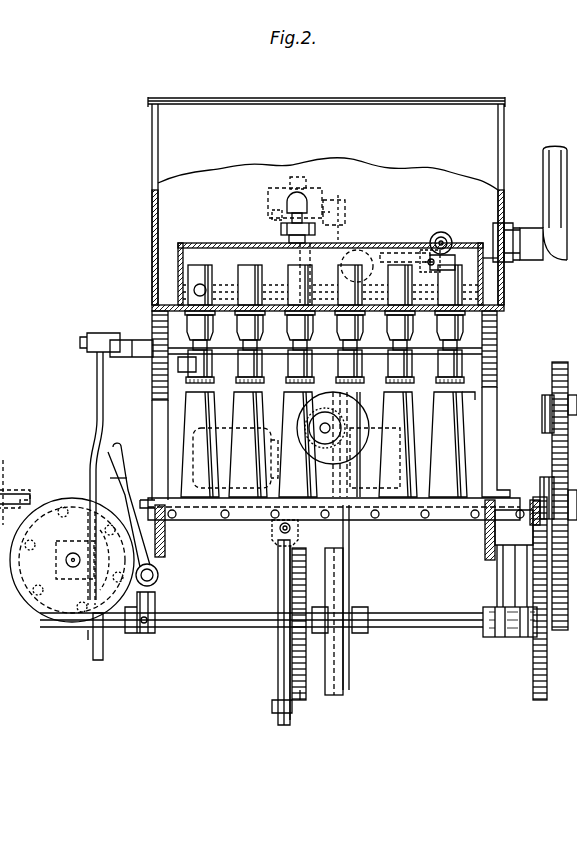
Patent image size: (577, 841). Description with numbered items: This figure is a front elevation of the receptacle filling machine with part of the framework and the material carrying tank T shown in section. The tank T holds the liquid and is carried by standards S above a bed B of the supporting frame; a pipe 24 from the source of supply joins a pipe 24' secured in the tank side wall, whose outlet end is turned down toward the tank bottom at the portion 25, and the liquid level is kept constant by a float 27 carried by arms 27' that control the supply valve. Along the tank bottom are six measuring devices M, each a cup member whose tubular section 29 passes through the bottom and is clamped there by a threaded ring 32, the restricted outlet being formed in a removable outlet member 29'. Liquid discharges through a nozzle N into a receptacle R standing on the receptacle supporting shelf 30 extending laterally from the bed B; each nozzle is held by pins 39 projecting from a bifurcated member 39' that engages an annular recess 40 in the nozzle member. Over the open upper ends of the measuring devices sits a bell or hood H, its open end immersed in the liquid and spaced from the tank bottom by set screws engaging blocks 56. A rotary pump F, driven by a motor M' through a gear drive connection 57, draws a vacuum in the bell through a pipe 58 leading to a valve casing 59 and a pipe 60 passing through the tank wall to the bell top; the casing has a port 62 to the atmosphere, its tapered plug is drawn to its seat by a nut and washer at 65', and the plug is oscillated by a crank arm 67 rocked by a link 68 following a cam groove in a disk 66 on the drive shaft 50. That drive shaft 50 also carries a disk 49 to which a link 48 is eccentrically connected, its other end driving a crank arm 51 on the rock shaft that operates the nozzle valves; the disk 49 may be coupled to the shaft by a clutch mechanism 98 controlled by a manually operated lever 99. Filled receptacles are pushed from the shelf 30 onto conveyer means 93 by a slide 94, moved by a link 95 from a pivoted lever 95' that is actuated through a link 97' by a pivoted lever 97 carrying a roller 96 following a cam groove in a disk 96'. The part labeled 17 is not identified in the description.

The tank T is at (503, 142).
The bell or hood H is at (205, 242).
The blocks 56 is at (200, 276).
The measuring device M is at (240, 275).
The pipe 60 is at (280, 207).
The valve casing 59 is at (282, 190).
The port 62 is at (306, 183).
The crank arm 67 is at (345, 207).
The nut and washer 65' is at (257, 214).
The pipe 58 is at (290, 260).
The float 27 is at (385, 246).
The arms 27' is at (421, 247).
The pipe 24' is at (447, 233).
The pipe portion 25 is at (498, 264).
The pipe 24 is at (530, 204).
The standards S is at (152, 324).
The crank arm 51 is at (104, 338).
The outlet member 29' is at (296, 361).
The annular recess 40 is at (182, 376).
The ring 32 is at (211, 347).
The tubular section 29 is at (291, 347).
The pins 39 is at (340, 353).
The bifurcated member 39' is at (340, 347).
The motor M' is at (224, 444).
The receptacle R is at (270, 432).
The rotary pump F is at (348, 402).
The gear drive connection 57 is at (352, 446).
The bed B is at (446, 528).
The receptacle supporting shelf 30 is at (190, 514).
The conveyer means 93 is at (385, 530).
The link 95 is at (269, 543).
The pivoted lever 95' is at (265, 632).
The roller 96 is at (275, 624).
The pivoted lever 97 is at (266, 632).
The link 97' is at (265, 699).
The disk 96' is at (315, 703).
The link 68 is at (346, 588).
The disk 66 is at (340, 690).
The drive shaft 50 is at (448, 628).
The gear rack 17 is at (498, 388).
The nozzle N is at (475, 394).
The link 48 is at (92, 428).
The manually operated lever 99 is at (120, 443).
The slide 94 is at (63, 508).
The disk 49 is at (106, 650).
The clutch mechanism 98 is at (150, 640).